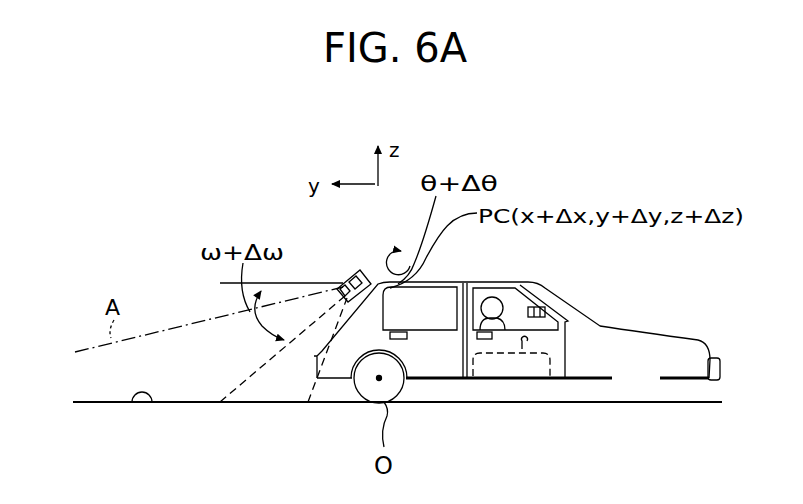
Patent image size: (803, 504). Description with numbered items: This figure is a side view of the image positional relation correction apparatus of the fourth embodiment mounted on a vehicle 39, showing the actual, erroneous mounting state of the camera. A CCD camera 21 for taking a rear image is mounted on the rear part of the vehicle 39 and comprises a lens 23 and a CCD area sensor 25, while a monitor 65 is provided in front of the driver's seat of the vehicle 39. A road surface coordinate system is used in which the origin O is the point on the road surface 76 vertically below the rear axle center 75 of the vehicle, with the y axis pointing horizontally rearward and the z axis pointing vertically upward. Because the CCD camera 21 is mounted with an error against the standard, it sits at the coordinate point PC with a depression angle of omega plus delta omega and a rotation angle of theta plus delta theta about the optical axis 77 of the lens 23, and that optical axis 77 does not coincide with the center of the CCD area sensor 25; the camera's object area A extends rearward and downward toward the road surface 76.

The CCD camera 21 is at (368, 272).
The lens 23 is at (346, 280).
The CCD area sensor 25 is at (357, 271).
The vehicle 39 is at (604, 322).
The monitor 65 is at (539, 288).
The rear axle center 75 is at (390, 398).
The road surface 76 is at (133, 403).
The optical axis 77 is at (254, 376).